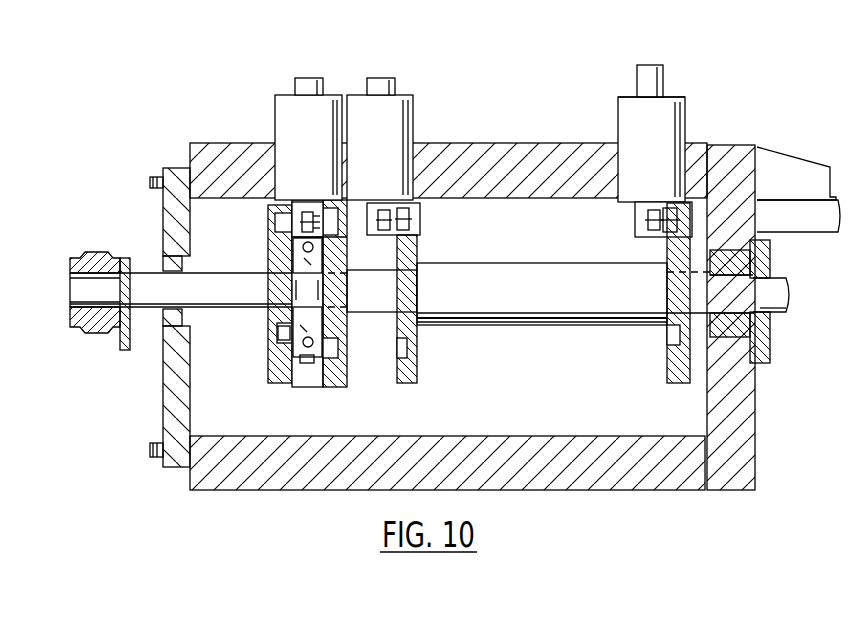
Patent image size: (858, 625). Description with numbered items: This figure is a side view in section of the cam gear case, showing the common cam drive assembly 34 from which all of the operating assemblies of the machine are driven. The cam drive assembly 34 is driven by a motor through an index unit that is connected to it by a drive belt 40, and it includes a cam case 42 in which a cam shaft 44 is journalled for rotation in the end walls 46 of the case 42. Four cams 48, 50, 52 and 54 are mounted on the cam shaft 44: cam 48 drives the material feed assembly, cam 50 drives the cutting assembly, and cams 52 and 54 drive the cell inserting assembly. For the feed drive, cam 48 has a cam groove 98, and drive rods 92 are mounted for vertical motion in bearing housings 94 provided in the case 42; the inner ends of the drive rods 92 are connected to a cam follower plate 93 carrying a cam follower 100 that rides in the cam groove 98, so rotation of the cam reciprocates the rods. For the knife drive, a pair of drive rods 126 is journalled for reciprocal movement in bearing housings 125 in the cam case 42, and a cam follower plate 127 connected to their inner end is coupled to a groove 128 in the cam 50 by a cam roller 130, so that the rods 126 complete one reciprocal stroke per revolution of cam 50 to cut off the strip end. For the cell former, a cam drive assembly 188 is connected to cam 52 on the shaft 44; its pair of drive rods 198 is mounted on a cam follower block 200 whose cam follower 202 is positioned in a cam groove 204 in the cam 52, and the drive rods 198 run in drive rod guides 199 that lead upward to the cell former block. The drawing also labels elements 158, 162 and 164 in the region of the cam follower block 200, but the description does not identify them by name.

The cam drive assembly 34 is at (508, 341).
The drive belt 40 is at (88, 328).
The cam case 42 is at (705, 115).
The cam shaft 44 is at (67, 297).
The end walls 46 is at (165, 384).
The cam 48 is at (668, 370).
The cam 50 is at (418, 375).
The cam 52 is at (337, 380).
The cam 54 is at (273, 370).
The drive rods 92 is at (662, 80).
The cam follower plate 93 is at (645, 205).
The bearing housings 94 is at (625, 107).
The cam groove 98 is at (668, 342).
The cam follower 100 is at (665, 240).
The bearing housings 125 is at (398, 128).
The drive rods 126 is at (375, 78).
The cam follower plate 127 is at (383, 207).
The groove 128 is at (408, 352).
The cam roller 130 is at (403, 225).
The bolt 158 is at (270, 334).
The bearing carrier 162 is at (298, 255).
The shaft portion 164 is at (285, 290).
The cam drive assembly 188 is at (267, 126).
The drive rods 198 is at (301, 78).
The drive rod guides 199 is at (320, 136).
The cam follower block 200 is at (315, 210).
The cam follower 202 is at (327, 225).
The cam groove 204 is at (317, 363).